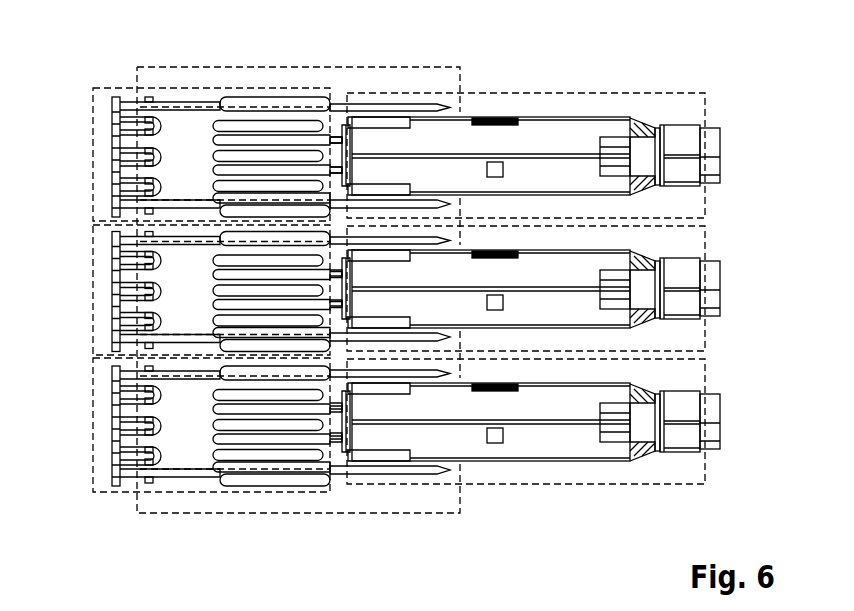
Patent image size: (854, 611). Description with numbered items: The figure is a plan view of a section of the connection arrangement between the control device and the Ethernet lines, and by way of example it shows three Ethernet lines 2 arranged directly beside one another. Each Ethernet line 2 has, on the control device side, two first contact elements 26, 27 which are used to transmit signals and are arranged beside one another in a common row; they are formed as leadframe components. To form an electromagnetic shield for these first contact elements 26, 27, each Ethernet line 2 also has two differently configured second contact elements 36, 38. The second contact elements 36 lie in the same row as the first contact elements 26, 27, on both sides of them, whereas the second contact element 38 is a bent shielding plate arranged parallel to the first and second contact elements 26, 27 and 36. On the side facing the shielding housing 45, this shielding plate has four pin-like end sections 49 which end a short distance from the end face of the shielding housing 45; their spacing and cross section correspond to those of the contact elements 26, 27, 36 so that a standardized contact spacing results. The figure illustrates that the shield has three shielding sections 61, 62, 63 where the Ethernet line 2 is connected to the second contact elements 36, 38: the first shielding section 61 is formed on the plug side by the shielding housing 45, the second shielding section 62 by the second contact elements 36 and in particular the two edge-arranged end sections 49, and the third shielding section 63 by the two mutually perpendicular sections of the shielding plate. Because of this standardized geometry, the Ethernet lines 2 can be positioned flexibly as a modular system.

The Ethernet line 2 is at (733, 152).
The first contact element 26 is at (328, 440).
The first contact element 27 is at (347, 440).
The second contact element 36 is at (408, 383).
The second contact element 38 is at (176, 143).
The shielding housing 45 is at (543, 117).
The pin-like end section 49 is at (422, 102).
The first shielding section 61 is at (660, 92).
The second shielding section 62 is at (213, 65).
The third shielding section 63 is at (92, 177).